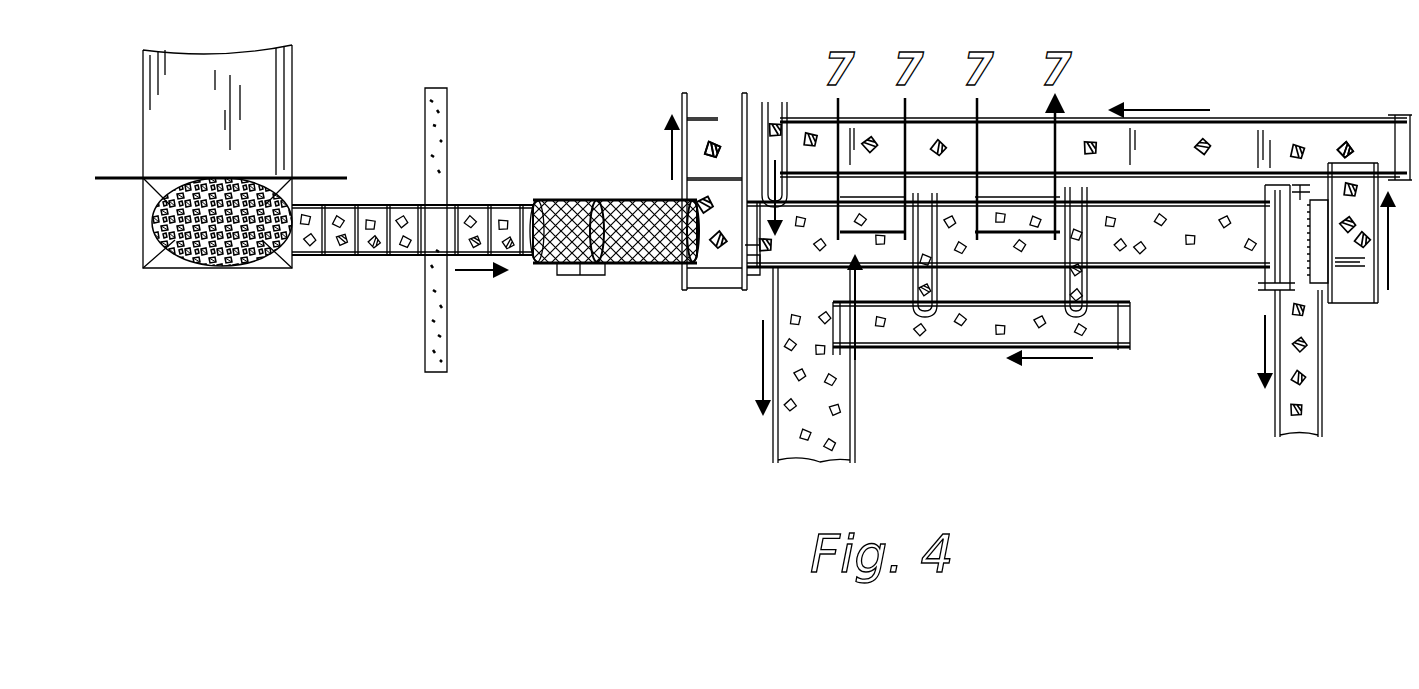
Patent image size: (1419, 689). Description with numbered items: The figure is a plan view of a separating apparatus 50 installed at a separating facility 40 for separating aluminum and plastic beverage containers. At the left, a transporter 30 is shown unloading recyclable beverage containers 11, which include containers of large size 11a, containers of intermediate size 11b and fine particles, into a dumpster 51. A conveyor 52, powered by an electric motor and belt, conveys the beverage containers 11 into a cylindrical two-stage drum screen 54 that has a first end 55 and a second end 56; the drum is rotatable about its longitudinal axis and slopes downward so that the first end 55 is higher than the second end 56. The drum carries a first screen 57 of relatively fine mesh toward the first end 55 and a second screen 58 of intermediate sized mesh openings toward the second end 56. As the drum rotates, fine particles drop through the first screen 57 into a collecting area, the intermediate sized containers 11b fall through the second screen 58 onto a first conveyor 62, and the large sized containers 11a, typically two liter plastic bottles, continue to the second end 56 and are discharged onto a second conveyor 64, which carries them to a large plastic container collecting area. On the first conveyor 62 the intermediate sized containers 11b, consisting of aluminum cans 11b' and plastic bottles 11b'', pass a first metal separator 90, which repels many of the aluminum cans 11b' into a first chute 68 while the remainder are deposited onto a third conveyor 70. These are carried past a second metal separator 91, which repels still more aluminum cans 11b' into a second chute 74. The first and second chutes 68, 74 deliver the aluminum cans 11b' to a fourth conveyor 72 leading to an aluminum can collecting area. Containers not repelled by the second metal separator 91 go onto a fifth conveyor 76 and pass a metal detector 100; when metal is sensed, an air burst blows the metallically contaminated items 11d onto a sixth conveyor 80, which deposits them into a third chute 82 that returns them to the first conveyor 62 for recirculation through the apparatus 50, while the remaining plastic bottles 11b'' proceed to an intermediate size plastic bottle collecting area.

The recyclable beverage containers 11 is at (160, 225).
The containers of large size 11a is at (712, 140).
The containers of intermediate size 11b is at (741, 299).
The aluminum cans 11b' is at (941, 365).
The plastic bottles 11b'' is at (1332, 363).
The metallically contaminated items 11d is at (1346, 140).
The transporter 30 is at (275, 120).
The separating facility 40 is at (412, 288).
The separating apparatus 50 is at (1160, 405).
The dumpster 51 is at (175, 262).
The conveyor 52 is at (368, 262).
The two-stage drum screen 54 is at (588, 290).
The first end 55 is at (597, 236).
The second end 56 is at (682, 185).
The first screen 57 is at (545, 265).
The second screen 58 is at (625, 262).
The first conveyor 62 is at (850, 290).
The second conveyor 64 is at (712, 290).
The first chute 68 is at (925, 205).
The third conveyor 70 is at (998, 200).
The fourth conveyor 72 is at (965, 345).
The second chute 74 is at (1095, 180).
The fifth conveyor 76 is at (1205, 262).
The sixth conveyor 80 is at (1263, 140).
The third chute 82 is at (805, 72).
The first metal separator 90 is at (880, 195).
The second metal separator 91 is at (1032, 200).
The metal detector 100 is at (1262, 270).